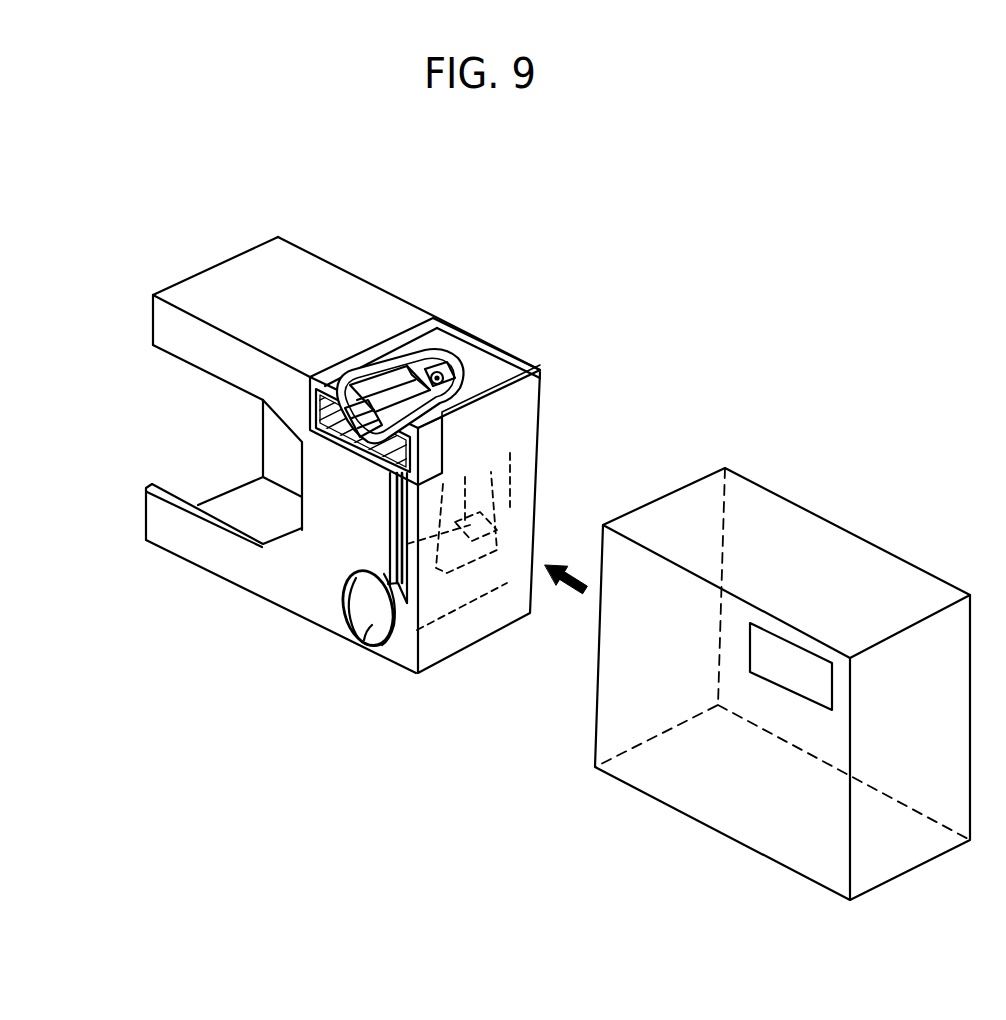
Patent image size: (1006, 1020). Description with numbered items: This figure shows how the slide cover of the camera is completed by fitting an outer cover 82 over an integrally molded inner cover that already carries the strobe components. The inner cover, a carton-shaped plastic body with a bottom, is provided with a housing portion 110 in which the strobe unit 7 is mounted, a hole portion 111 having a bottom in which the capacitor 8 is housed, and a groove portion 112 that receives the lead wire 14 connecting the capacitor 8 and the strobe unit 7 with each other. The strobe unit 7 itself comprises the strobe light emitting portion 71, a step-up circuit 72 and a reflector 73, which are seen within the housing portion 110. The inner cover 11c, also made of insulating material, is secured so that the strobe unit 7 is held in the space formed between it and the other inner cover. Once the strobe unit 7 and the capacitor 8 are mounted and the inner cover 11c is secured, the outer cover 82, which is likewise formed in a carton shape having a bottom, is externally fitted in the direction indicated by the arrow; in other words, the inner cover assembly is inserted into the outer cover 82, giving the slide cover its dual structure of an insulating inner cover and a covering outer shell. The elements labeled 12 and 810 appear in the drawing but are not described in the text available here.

The strobe unit 7 is at (513, 236).
The capacitor 8 is at (380, 633).
The pillar 12 is at (302, 448).
The lead wire 14 is at (397, 535).
The strobe light emitting portion 71 is at (425, 362).
The step-up circuit 72 is at (458, 368).
The reflector 73 is at (385, 372).
The outer cover 82 is at (822, 525).
The housing portion 110 is at (377, 380).
The hole portion 111 is at (356, 638).
The groove portion 112 is at (390, 503).
The upper block 810 is at (182, 299).
The inner cover 11c is at (497, 370).